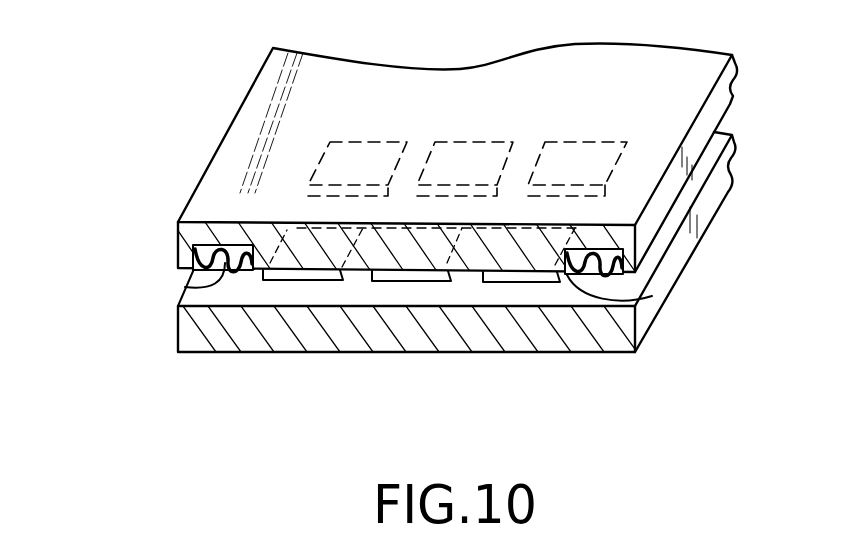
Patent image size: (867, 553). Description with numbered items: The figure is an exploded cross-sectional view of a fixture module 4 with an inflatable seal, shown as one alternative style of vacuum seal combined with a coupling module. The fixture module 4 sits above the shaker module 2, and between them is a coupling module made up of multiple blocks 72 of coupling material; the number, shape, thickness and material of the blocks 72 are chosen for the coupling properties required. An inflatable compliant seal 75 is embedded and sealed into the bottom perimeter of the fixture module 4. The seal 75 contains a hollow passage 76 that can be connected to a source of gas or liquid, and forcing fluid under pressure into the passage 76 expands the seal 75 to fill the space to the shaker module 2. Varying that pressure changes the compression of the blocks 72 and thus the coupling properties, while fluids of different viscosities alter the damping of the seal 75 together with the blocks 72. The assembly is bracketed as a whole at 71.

The shaker module 2 is at (178, 322).
The fixture module 4 is at (223, 142).
The module assembly 71 is at (433, 187).
The blocks 72 is at (488, 143).
The inflatable compliant seal 75 is at (187, 287).
The hollow passage 76 is at (193, 255).